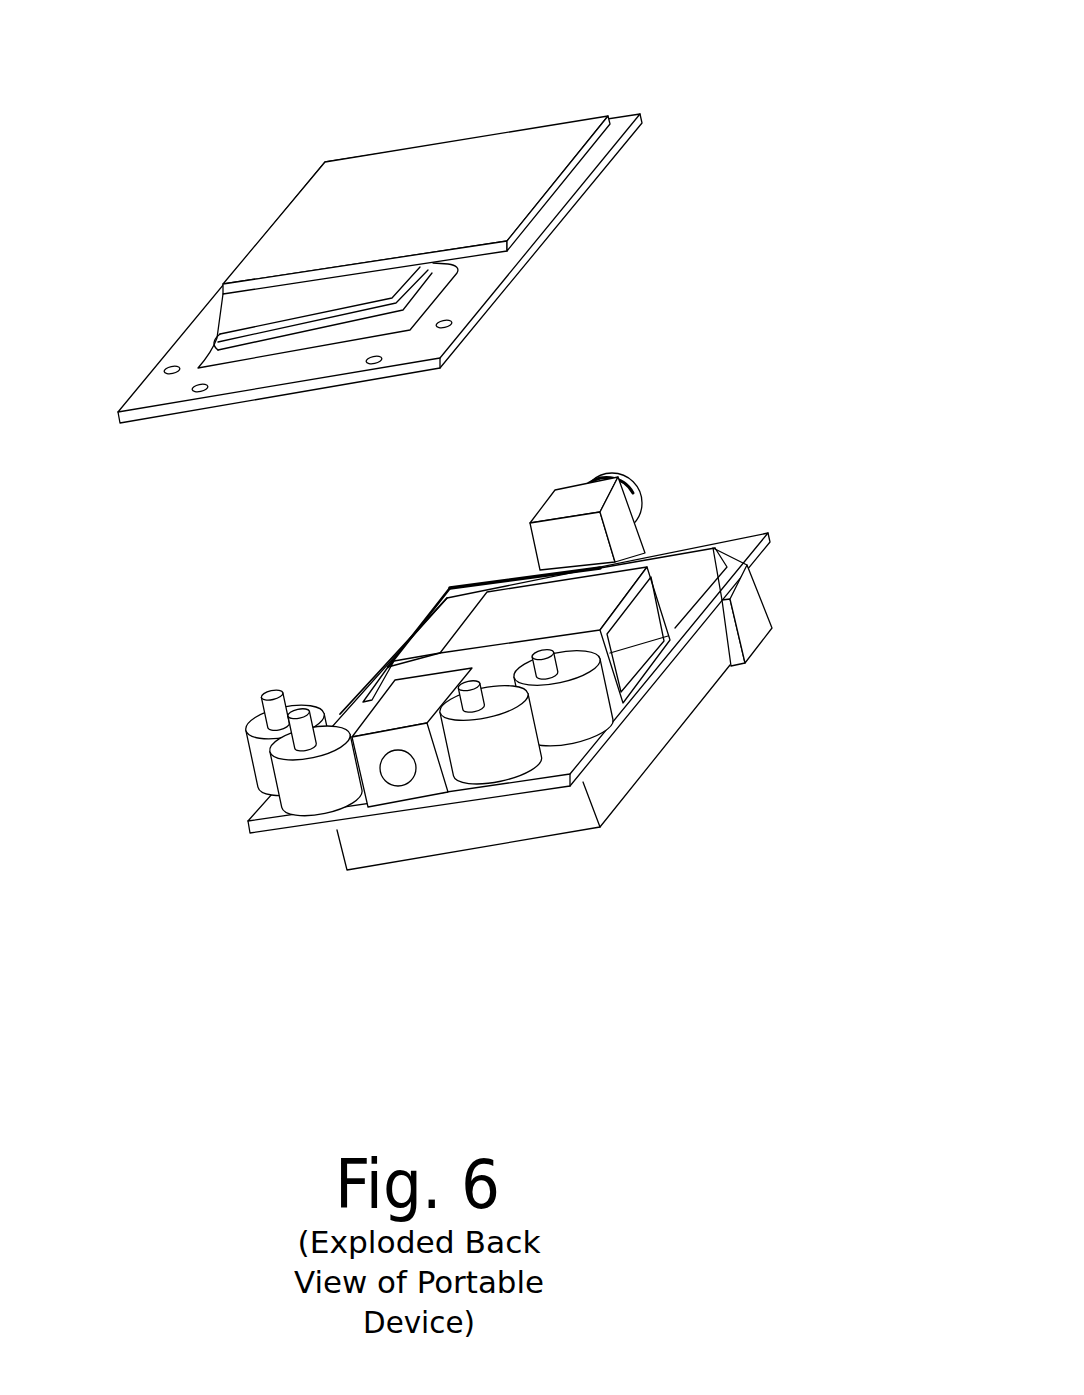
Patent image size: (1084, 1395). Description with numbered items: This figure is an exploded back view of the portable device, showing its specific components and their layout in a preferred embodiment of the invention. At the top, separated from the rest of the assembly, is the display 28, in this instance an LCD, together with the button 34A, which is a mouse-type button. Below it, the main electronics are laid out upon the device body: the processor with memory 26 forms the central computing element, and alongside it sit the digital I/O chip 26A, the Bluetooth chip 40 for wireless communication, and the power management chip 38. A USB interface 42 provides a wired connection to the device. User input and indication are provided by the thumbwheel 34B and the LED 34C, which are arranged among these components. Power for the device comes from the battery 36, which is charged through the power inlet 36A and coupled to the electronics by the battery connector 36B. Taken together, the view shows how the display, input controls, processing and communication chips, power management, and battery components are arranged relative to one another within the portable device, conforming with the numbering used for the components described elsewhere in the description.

The processor with memory 26 is at (590, 608).
The digital I/O chip 26A is at (258, 654).
The display 28 is at (380, 218).
The button 34A is at (251, 261).
The thumbwheel 34B is at (629, 719).
The LED 34C is at (678, 419).
The battery 36 is at (533, 796).
The power inlet 36A is at (286, 797).
The battery connector 36B is at (827, 620).
The power management chip 38 is at (301, 605).
The Bluetooth chip 40 is at (531, 569).
The USB interface 42 is at (694, 606).